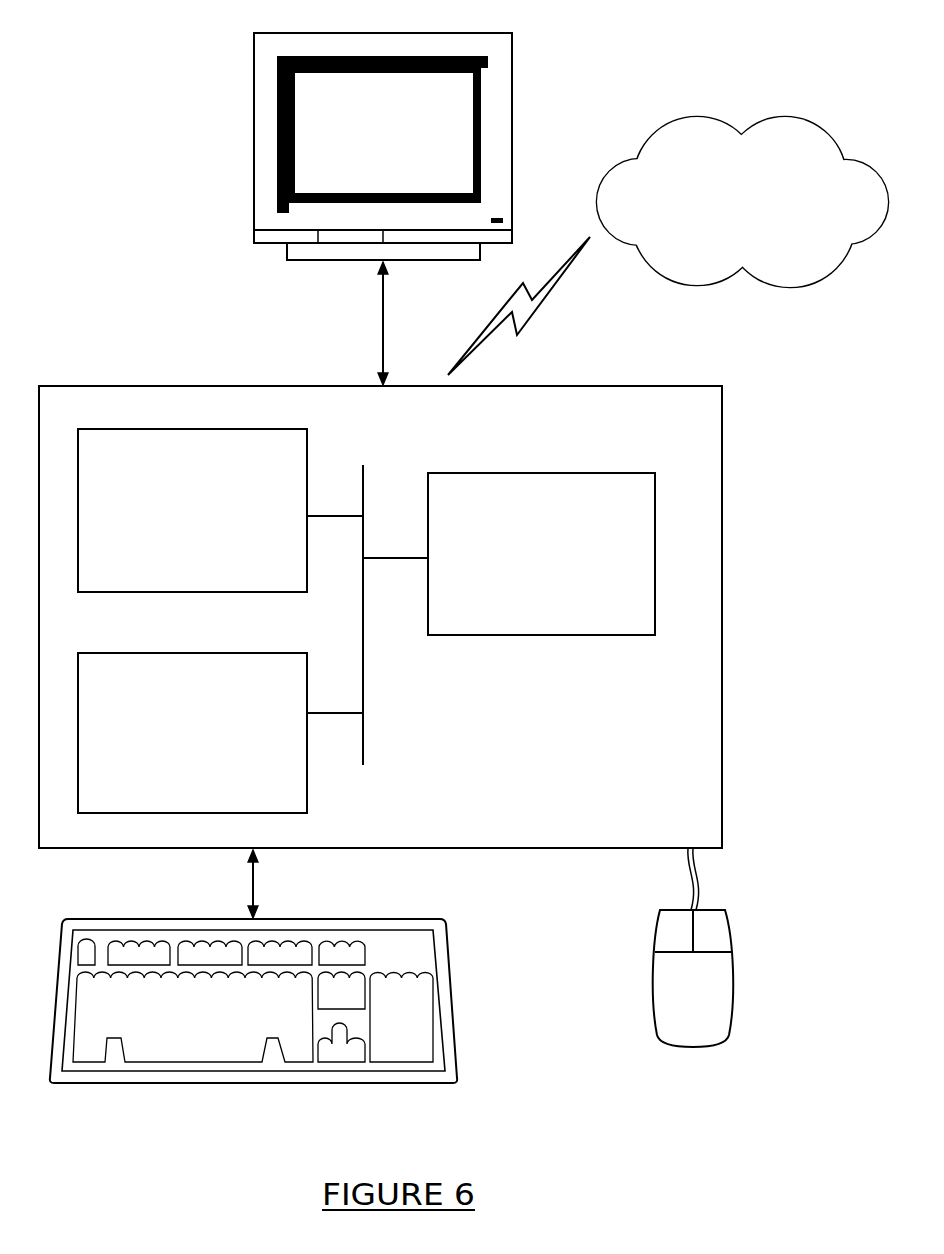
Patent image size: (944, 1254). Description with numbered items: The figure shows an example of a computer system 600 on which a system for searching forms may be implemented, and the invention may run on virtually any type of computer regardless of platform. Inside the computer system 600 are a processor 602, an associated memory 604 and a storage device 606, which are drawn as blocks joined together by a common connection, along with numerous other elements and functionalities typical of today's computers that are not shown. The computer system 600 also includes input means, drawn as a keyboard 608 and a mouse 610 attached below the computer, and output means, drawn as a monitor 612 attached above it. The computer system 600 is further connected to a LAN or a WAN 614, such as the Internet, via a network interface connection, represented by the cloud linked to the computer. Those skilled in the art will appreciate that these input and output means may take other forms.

The computer system 600 is at (760, 628).
The processor 602 is at (519, 563).
The memory 604 is at (172, 522).
The storage device 606 is at (169, 746).
The keyboard 608 is at (171, 1028).
The mouse 610 is at (672, 998).
The monitor 612 is at (364, 140).
The LAN or WAN 614 is at (724, 213).